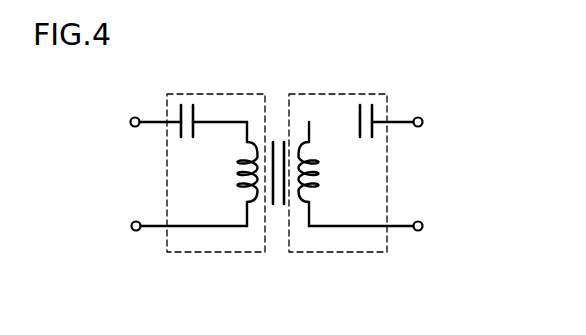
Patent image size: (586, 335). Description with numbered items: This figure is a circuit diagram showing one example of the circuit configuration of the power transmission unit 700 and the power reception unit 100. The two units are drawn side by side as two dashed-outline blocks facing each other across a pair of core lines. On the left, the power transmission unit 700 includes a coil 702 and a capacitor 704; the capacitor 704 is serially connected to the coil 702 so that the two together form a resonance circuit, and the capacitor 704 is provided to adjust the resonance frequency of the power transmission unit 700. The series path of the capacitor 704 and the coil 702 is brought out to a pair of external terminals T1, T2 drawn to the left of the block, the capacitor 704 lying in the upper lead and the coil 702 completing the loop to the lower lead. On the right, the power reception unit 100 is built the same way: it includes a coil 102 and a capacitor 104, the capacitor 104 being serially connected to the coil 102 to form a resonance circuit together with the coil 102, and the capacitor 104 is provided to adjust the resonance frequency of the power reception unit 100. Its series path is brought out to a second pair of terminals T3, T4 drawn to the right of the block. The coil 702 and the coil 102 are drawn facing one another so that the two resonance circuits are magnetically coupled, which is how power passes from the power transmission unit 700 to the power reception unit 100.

The power transmission unit 700 is at (248, 94).
The coil 702 is at (245, 185).
The capacitor 704 is at (192, 107).
The power reception unit 100 is at (306, 94).
The coil 102 is at (313, 185).
The capacitor 104 is at (358, 107).
The first terminal T1 is at (130, 121).
The second terminal T2 is at (130, 225).
The third terminal T3 is at (423, 121).
The fourth terminal T4 is at (423, 225).